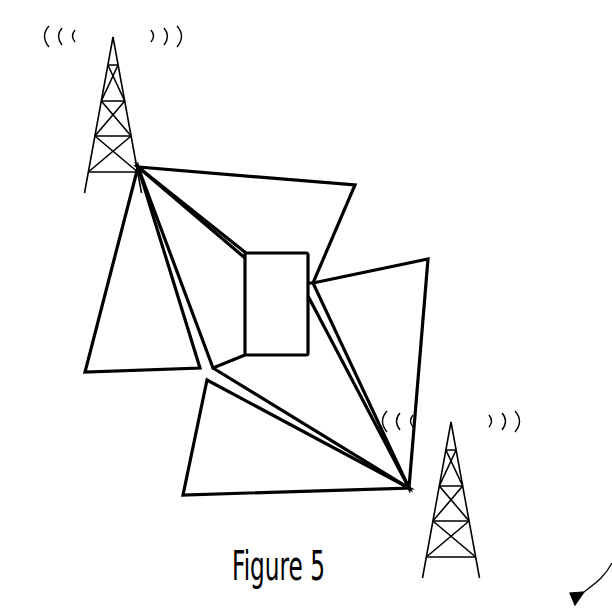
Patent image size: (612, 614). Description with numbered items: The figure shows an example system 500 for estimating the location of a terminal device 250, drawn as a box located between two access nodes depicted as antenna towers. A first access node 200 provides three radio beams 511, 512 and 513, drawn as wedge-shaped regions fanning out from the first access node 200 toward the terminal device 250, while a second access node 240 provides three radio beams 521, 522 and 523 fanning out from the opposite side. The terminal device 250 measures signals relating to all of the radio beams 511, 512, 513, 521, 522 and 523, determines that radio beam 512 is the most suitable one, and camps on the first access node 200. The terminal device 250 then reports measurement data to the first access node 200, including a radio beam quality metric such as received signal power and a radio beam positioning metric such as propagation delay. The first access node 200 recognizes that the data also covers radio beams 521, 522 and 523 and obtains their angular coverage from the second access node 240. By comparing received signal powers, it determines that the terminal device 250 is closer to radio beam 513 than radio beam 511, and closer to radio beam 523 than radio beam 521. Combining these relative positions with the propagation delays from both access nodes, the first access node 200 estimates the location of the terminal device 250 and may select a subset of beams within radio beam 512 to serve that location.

The first access node 200 is at (94, 144).
The second access node 240 is at (432, 528).
The terminal device 250 is at (292, 321).
The example system 500 is at (436, 159).
The radio beam 511 is at (149, 328).
The radio beam 512 is at (223, 275).
The radio beam 513 is at (290, 227).
The radio beam 521 is at (270, 470).
The radio beam 522 is at (342, 410).
The radio beam 523 is at (395, 355).